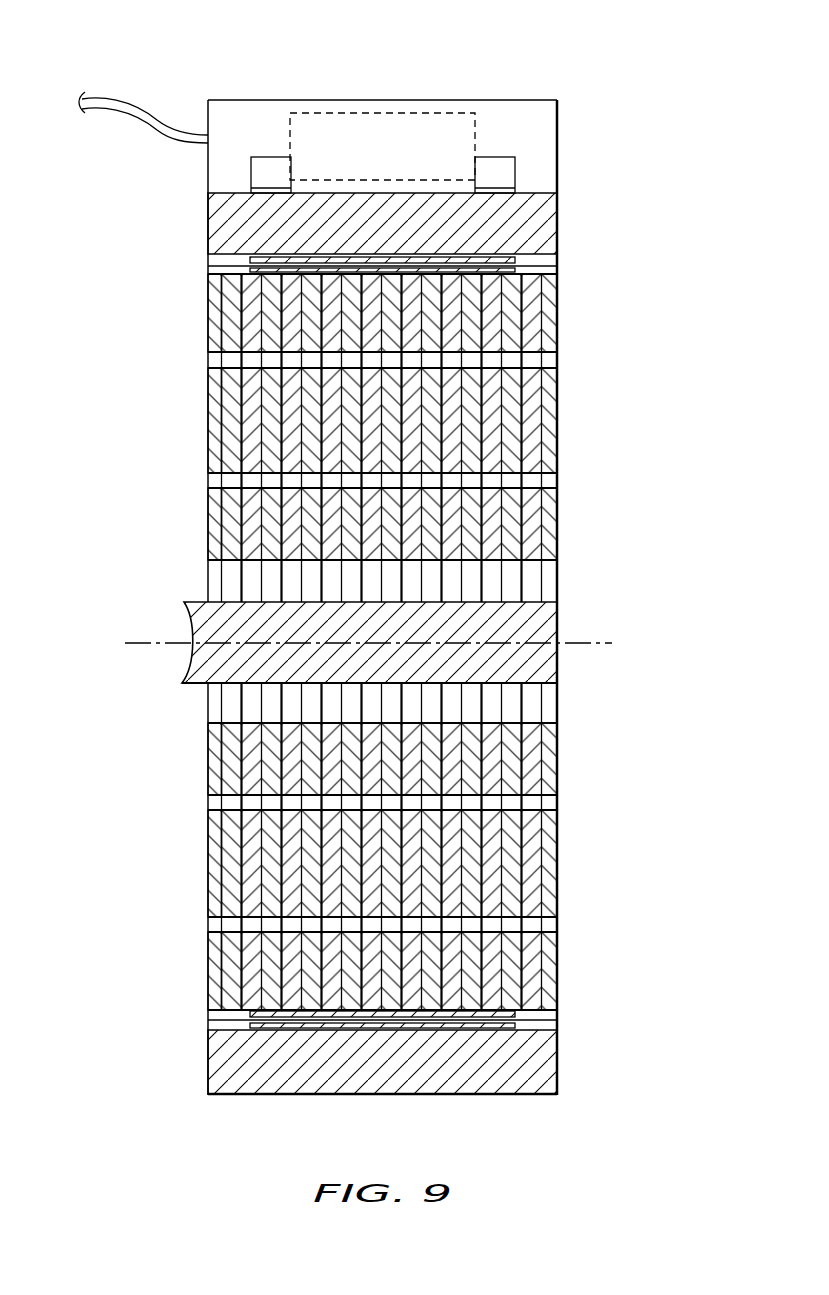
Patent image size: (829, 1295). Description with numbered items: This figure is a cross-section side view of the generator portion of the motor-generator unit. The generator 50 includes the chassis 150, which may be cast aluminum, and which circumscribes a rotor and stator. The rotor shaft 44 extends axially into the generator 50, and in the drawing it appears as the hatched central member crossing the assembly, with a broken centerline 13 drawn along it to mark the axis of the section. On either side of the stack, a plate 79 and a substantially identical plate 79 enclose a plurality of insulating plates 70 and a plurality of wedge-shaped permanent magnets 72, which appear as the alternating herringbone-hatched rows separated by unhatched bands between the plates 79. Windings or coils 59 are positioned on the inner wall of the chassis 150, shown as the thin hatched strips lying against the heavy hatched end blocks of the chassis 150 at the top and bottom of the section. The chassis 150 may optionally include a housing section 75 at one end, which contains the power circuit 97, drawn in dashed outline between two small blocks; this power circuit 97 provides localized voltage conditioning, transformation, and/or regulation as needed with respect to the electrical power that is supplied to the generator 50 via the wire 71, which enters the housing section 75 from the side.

The central axis 13 is at (604, 640).
The rotor shaft 44 is at (384, 674).
The generator 50 is at (640, 72).
The windings 59 is at (262, 253).
The insulating plates 70 is at (505, 359).
The wire 71 is at (110, 100).
The wedge-shaped permanent magnets 72 is at (497, 408).
The housing section 75 is at (252, 118).
The plate 79 is at (208, 418).
The power circuit 97 is at (399, 159).
The chassis 150 is at (497, 118).